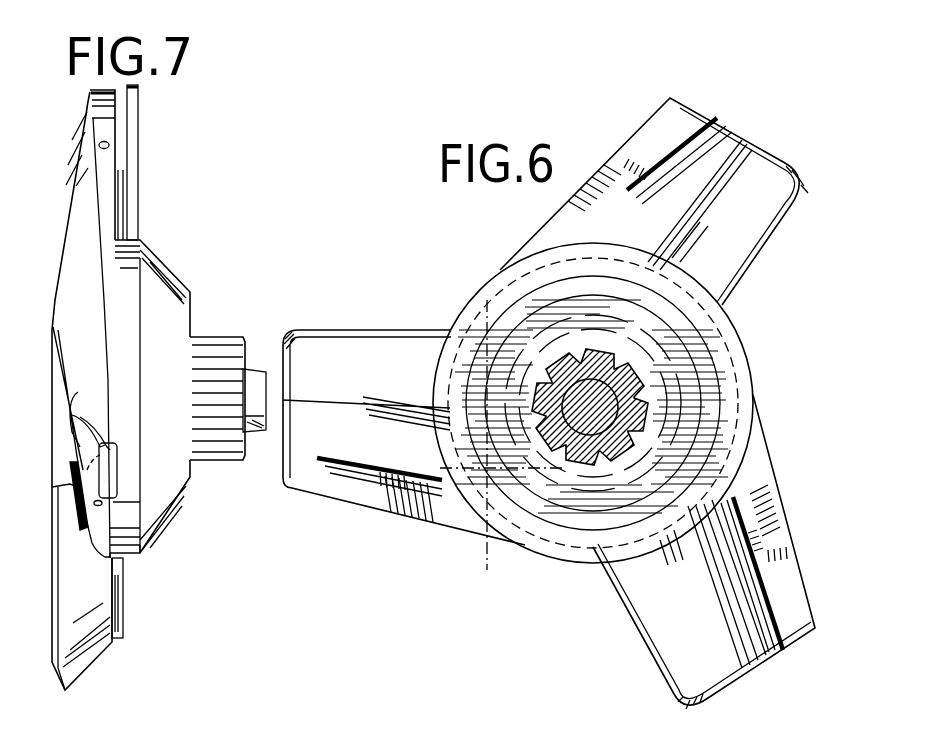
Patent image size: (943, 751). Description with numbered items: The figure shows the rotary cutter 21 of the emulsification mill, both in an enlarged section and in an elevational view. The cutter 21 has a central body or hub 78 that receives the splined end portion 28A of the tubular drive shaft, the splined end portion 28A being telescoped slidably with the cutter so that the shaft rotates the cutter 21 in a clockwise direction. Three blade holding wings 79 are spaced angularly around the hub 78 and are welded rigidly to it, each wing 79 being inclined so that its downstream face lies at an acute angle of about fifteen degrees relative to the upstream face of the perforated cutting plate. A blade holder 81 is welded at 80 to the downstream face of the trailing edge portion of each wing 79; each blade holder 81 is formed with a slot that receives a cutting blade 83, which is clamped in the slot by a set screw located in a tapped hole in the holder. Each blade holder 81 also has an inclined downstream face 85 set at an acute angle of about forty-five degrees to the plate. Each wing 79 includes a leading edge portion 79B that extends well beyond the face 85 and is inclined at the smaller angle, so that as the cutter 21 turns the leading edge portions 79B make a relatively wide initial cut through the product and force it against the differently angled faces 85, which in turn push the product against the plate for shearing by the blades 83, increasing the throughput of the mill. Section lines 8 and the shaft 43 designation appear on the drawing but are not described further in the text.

In FIG. 6, the section line 8 is at (430, 310).
In FIG. 6, the rotary cutter 21 is at (500, 268).
In FIG. 7, the rotary cutter 21 is at (152, 238).
In FIG. 6, the splined end portion 28A is at (632, 382).
In FIG. 7, the splined end portion 28A is at (222, 338).
In FIG. 6, the shaft 43 is at (556, 432).
In FIG. 7, the shaft 43 is at (257, 370).
In FIG. 6, the hub 78 is at (526, 540).
In FIG. 7, the hub 78 is at (182, 479).
In FIG. 6, the blade holding wing 79 is at (338, 326).
In FIG. 7, the blade holding wing 79 is at (60, 426).
In FIG. 6, the leading edge portion 79B is at (786, 210).
In FIG. 7, the weld 80 is at (76, 396).
In FIG. 6, the blade holder 81 is at (322, 490).
In FIG. 7, the blade holder 81 is at (80, 417).
In FIG. 6, the cutting blade 83 is at (344, 464).
In FIG. 7, the cutting blade 83 is at (125, 128).
In FIG. 6, the inclined downstream face 85 is at (392, 436).
In FIG. 7, the inclined downstream face 85 is at (105, 445).